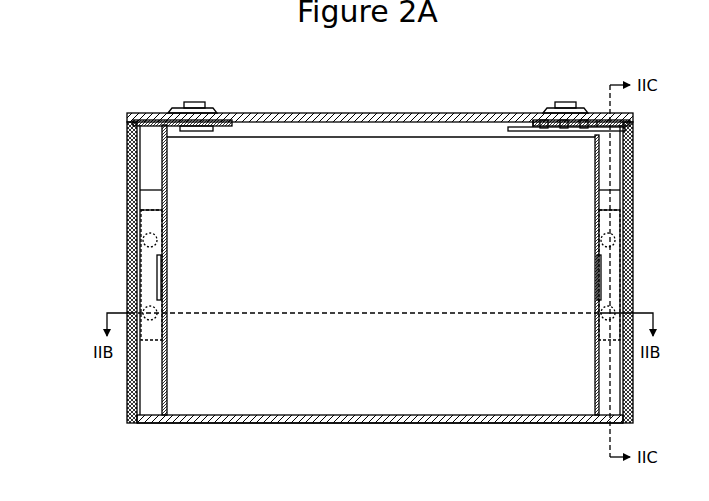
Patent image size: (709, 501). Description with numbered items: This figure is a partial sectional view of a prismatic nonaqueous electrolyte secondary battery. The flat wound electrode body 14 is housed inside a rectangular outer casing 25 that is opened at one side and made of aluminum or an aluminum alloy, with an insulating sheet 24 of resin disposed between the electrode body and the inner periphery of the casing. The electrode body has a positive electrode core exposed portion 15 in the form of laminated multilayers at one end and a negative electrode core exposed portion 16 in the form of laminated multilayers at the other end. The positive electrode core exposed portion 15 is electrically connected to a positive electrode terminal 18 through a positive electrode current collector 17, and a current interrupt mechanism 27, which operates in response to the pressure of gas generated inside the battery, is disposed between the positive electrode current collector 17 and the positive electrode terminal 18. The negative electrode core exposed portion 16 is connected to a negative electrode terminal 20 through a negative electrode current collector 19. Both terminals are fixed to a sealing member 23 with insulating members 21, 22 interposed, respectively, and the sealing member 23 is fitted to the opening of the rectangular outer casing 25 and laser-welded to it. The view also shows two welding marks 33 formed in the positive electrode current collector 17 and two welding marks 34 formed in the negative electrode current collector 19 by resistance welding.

The flat wound electrode body 14 is at (396, 387).
The positive electrode core exposed portion 15 is at (613, 393).
The negative electrode core exposed portion 16 is at (148, 397).
The positive electrode current collector 17 is at (613, 178).
The positive electrode terminal 18 is at (558, 103).
The negative electrode current collector 19 is at (145, 222).
The negative electrode terminal 20 is at (196, 103).
The insulating member 21 is at (543, 112).
The insulating member 22 is at (214, 114).
The sealing member 23 is at (418, 113).
The insulating sheet 24 is at (462, 418).
The rectangular outer casing 25 is at (540, 424).
The current interrupt mechanism 27 is at (556, 131).
The welding marks 33 is at (602, 306).
The welding marks 34 is at (158, 249).